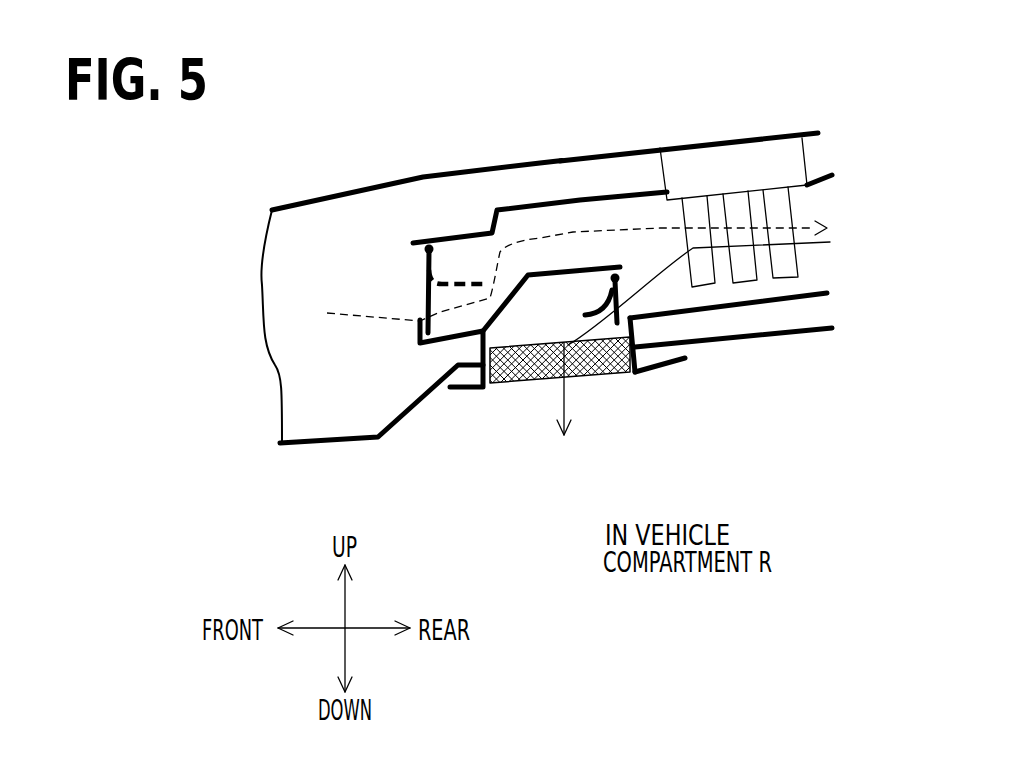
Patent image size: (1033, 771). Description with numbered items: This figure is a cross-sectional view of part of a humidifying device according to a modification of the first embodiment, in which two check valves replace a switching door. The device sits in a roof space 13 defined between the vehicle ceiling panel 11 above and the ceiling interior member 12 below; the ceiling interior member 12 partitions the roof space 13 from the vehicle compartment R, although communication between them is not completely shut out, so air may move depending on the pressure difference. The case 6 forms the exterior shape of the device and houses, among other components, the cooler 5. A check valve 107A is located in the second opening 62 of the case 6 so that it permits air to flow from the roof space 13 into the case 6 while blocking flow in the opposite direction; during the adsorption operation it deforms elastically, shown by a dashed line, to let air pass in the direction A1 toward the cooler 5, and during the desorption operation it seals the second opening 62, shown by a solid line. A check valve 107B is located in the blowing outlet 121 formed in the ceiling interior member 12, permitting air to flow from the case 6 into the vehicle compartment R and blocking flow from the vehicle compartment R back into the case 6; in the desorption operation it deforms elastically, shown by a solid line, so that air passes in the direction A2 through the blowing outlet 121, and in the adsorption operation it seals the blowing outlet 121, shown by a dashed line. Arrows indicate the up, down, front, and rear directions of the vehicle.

The roof space 13 is at (360, 233).
The vehicle ceiling panel 11 is at (613, 153).
The case 6 is at (507, 207).
The check valve 107A is at (427, 252).
The check valve 107B is at (613, 276).
The second opening 62 is at (418, 320).
The cooler 5 is at (742, 208).
The direction in which air flows in the adsorption operation A1 is at (627, 227).
The ceiling interior member 12 is at (757, 342).
The blowing outlet 121 is at (623, 372).
The direction in which air flows in the desorption operation A2 is at (564, 398).